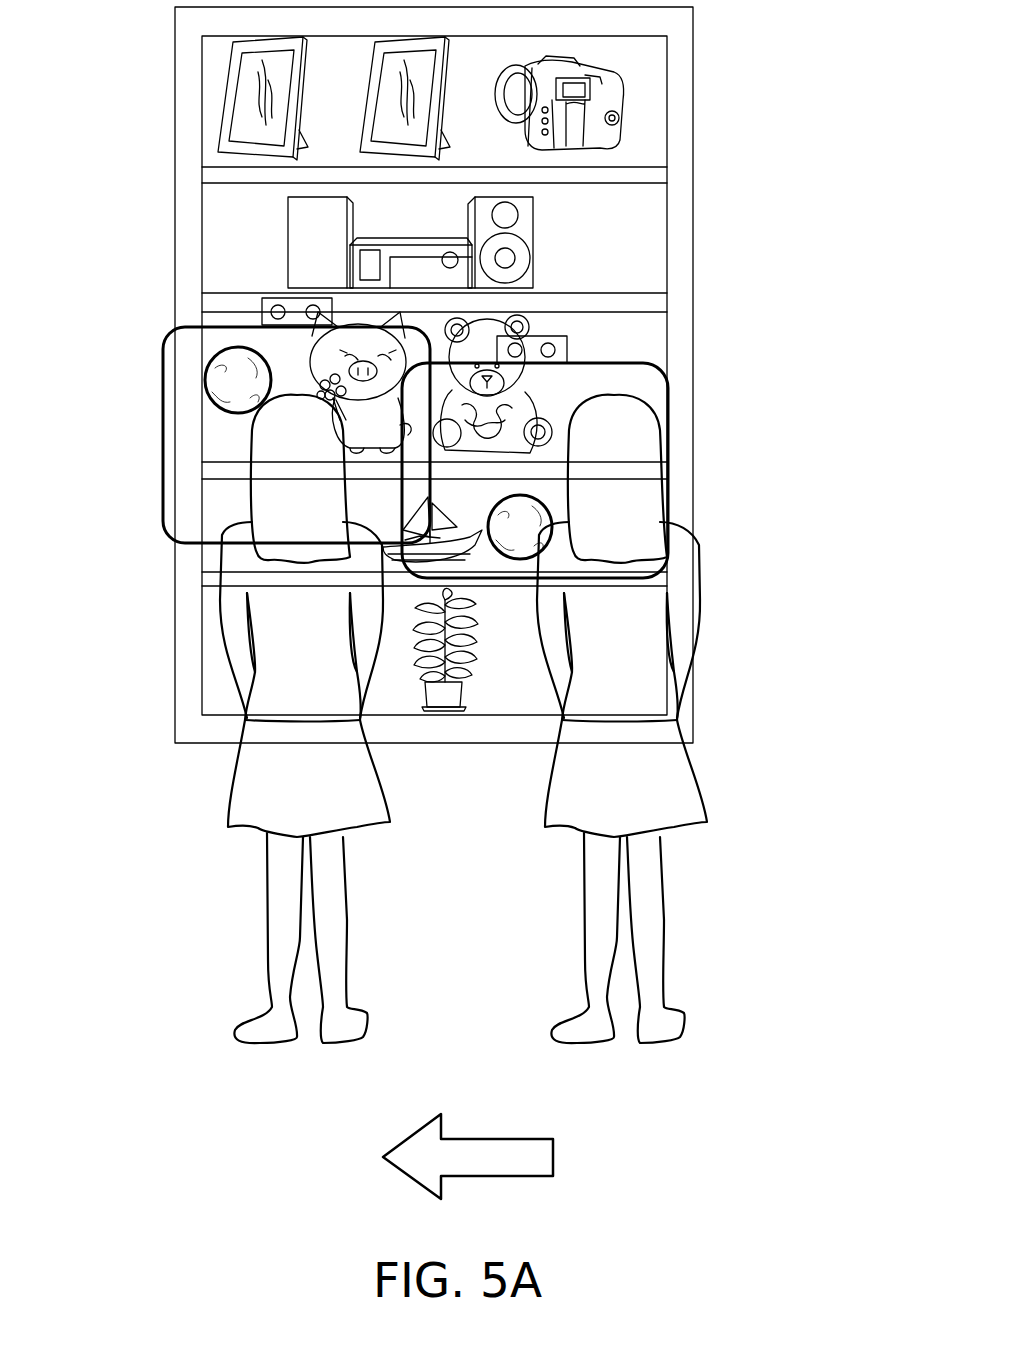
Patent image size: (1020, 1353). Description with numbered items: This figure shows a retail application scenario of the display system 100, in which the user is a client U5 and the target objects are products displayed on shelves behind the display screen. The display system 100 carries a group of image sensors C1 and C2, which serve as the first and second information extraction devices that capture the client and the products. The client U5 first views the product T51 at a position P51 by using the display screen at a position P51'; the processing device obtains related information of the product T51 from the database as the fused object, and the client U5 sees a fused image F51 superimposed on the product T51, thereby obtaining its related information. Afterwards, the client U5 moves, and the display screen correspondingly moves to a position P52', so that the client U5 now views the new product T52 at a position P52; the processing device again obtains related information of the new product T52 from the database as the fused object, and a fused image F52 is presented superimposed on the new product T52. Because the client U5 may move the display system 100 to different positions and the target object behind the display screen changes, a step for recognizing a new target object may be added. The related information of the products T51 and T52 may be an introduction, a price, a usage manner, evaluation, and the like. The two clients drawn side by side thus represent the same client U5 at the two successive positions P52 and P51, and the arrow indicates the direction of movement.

The display system 100 is at (162, 475).
The image sensor C1 is at (315, 297).
The image sensor C2 is at (278, 297).
The position of display screen P52' is at (253, 424).
The position of display screen P51' is at (576, 586).
The new product T52 is at (207, 365).
The product T51 is at (528, 556).
The fused image F52 is at (207, 390).
The fused image F51 is at (493, 554).
The client U5 is at (205, 605).
The position of product P52 is at (305, 754).
The position of product P51 is at (622, 749).